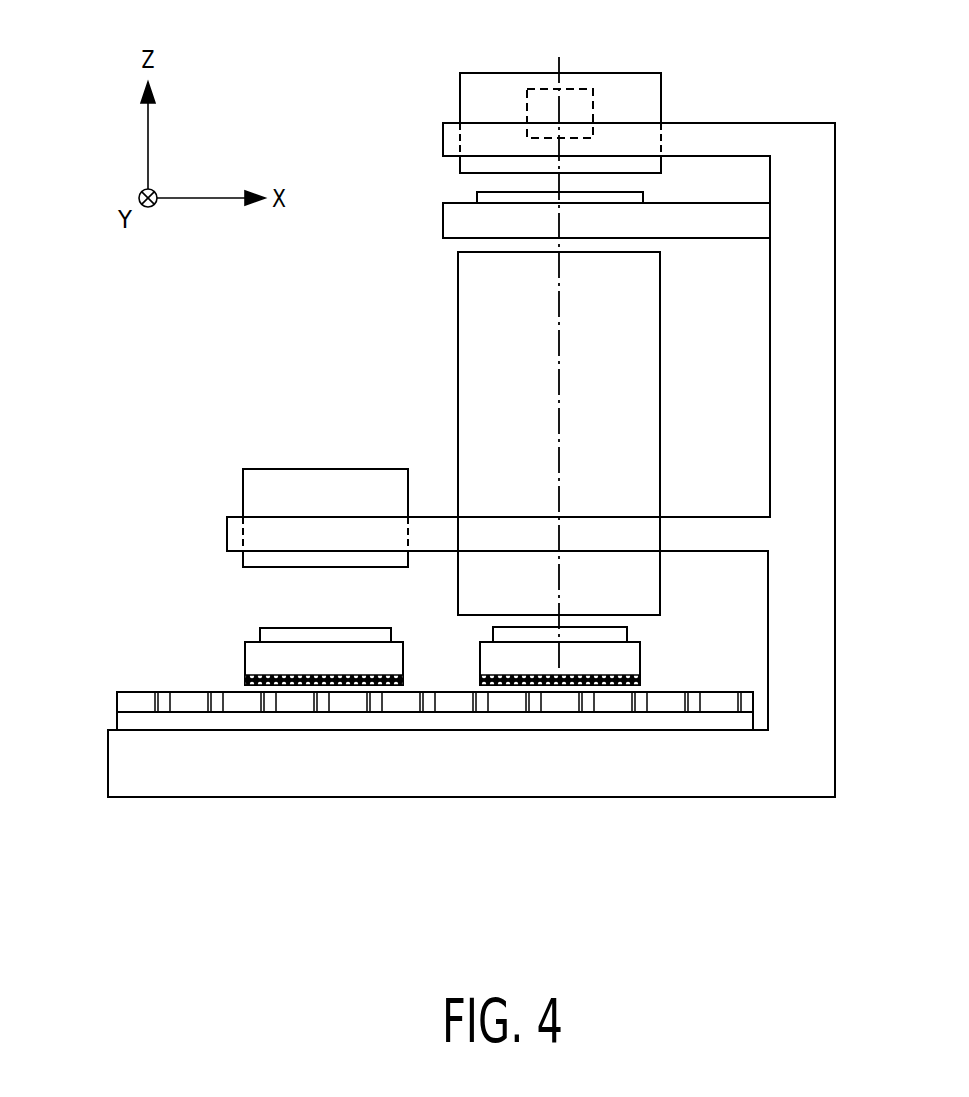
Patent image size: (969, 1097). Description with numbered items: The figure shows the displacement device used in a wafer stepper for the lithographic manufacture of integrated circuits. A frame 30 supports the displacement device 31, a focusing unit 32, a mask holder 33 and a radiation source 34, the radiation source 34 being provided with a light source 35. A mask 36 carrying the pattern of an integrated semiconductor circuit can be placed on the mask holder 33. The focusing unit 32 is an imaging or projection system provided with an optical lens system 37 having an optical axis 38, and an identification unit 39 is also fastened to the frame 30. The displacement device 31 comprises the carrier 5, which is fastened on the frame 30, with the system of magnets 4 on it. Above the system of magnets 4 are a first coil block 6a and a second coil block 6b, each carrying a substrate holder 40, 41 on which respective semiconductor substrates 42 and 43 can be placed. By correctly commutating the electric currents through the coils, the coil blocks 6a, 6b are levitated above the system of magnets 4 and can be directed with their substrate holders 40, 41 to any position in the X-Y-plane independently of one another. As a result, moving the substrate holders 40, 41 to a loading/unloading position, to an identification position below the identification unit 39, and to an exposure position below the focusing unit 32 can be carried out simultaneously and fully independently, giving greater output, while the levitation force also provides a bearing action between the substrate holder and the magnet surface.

The system of magnets 4 is at (112, 696).
The carrier 5 is at (710, 722).
The first coil block 6a is at (640, 680).
The second coil block 6b is at (245, 680).
The frame 30 is at (820, 574).
The displacement device 31 is at (278, 745).
The focusing unit 32 is at (458, 340).
The mask holder 33 is at (465, 219).
The radiation source 34 is at (648, 80).
The light source 35 is at (541, 88).
The mask 36 is at (488, 195).
The optical lens system 37 is at (640, 337).
The optical axis 38 is at (558, 390).
The identification unit 39 is at (282, 487).
The substrate holder 40 is at (612, 662).
The substrate holder 41 is at (372, 668).
The semiconductor substrate 42 is at (610, 633).
The semiconductor substrate 43 is at (283, 635).